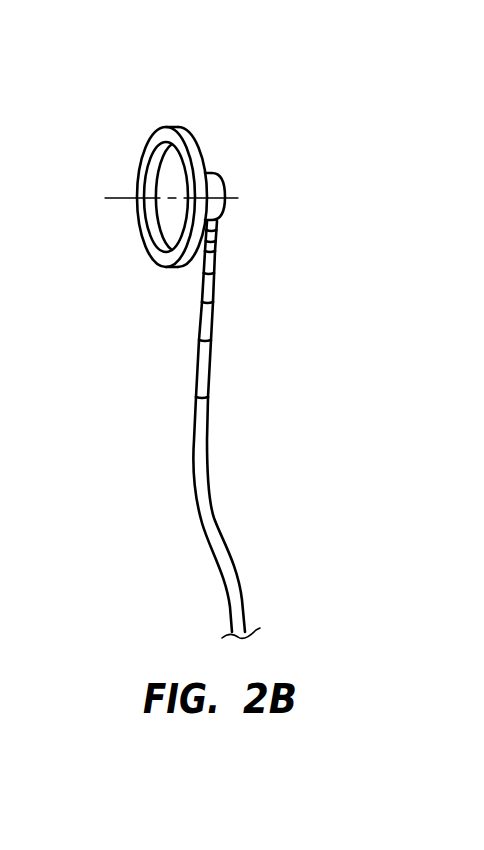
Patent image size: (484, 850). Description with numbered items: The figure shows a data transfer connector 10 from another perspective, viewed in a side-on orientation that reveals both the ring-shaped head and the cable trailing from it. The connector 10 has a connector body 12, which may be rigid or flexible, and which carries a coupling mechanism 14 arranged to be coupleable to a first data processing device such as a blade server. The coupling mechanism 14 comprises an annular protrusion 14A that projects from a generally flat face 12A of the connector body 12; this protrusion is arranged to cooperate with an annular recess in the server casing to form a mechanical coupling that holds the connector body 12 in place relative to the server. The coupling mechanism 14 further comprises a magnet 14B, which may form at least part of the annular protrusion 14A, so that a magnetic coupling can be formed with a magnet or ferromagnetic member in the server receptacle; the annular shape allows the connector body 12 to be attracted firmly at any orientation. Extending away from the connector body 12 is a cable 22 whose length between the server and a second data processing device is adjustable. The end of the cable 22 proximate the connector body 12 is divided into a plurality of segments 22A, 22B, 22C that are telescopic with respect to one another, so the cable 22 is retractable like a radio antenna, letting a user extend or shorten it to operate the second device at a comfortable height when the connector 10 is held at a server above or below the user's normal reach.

The data transfer connector 10 is at (116, 69).
The connector body 12 is at (192, 145).
The generally flat face 12A is at (163, 214).
The coupling mechanism 14 is at (133, 146).
The annular protrusion 14A is at (183, 127).
The magnet 14B is at (138, 175).
The cable 22 is at (310, 245).
The segment 22A is at (213, 238).
The segment 22B is at (210, 287).
The segment 22C is at (198, 378).